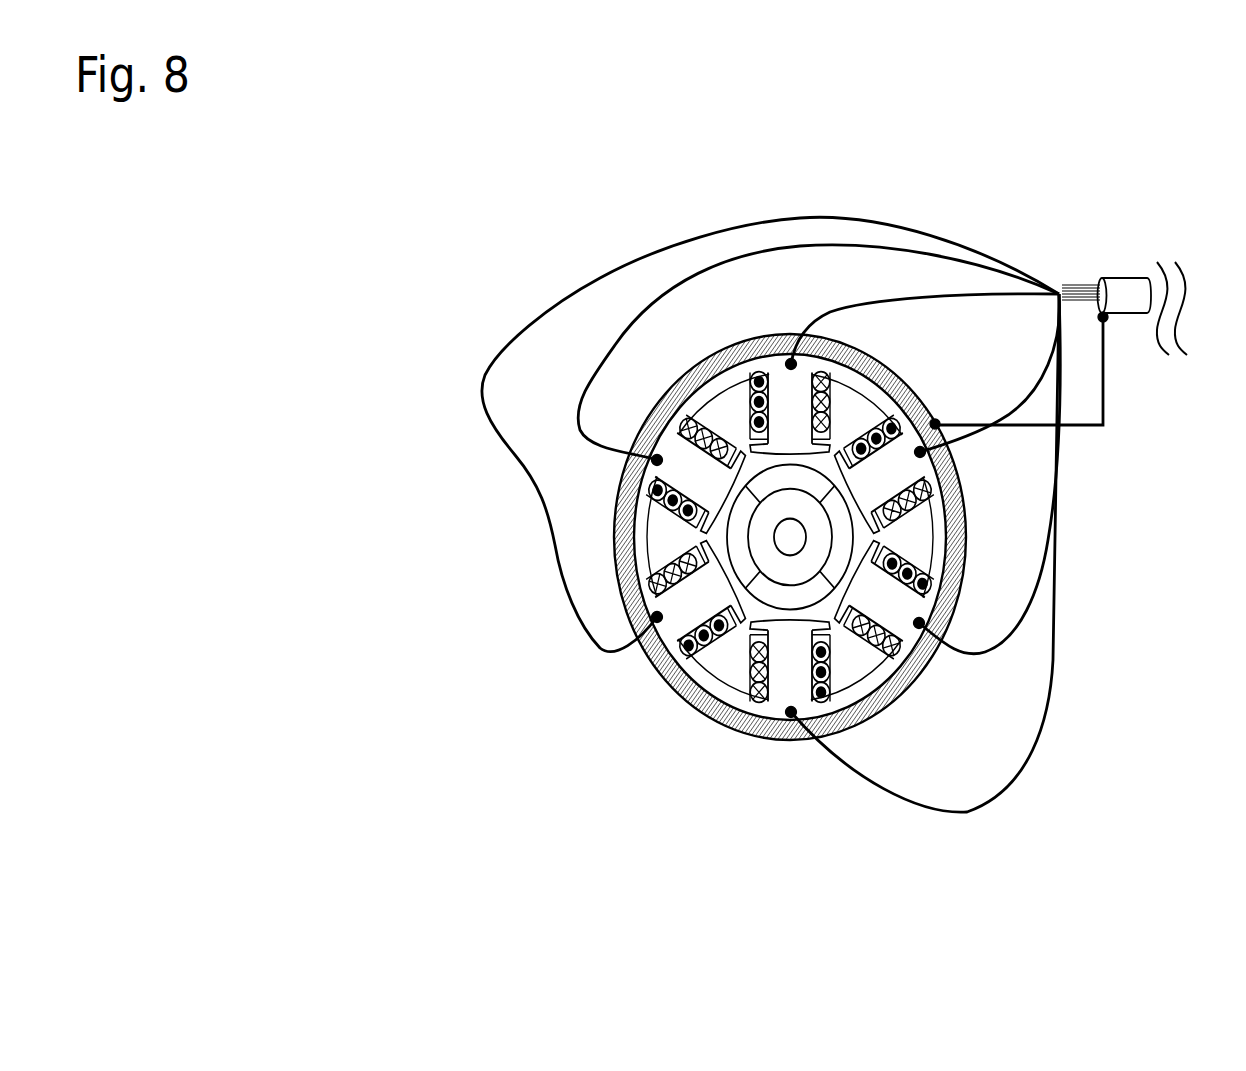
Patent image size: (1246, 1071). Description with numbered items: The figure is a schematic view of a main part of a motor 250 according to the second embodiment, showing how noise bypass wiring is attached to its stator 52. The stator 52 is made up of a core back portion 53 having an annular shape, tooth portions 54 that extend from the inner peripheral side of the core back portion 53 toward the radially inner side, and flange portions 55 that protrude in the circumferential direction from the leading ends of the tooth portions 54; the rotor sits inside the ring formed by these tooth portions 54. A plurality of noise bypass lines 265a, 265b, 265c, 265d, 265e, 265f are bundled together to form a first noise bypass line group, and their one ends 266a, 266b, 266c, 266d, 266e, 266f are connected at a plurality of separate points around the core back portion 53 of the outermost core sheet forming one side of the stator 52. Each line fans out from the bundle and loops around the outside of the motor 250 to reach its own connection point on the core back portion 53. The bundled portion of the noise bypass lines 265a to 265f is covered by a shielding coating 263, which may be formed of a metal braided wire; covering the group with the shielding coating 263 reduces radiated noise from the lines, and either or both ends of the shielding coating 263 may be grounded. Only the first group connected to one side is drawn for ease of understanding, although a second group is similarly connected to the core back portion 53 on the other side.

The motor 250 is at (590, 251).
The stator 52 is at (813, 840).
The core back portion 53 is at (820, 737).
The tooth portions 54 is at (787, 670).
The flange portions 55 is at (760, 693).
The shielding coating 263 is at (1128, 278).
The noise bypass line 265a is at (893, 295).
The noise bypass line 265b is at (1060, 460).
The noise bypass line 265c is at (1050, 515).
The noise bypass line 265d is at (1058, 586).
The noise bypass line 265e is at (830, 217).
The noise bypass line 265f is at (865, 247).
The one end of noise bypass line 266a is at (790, 363).
The one end of noise bypass line 266b is at (942, 455).
The one end of noise bypass line 266c is at (920, 625).
The one end of noise bypass line 266d is at (773, 720).
The one end of noise bypass line 266e is at (657, 622).
The one end of noise bypass line 266f is at (657, 458).